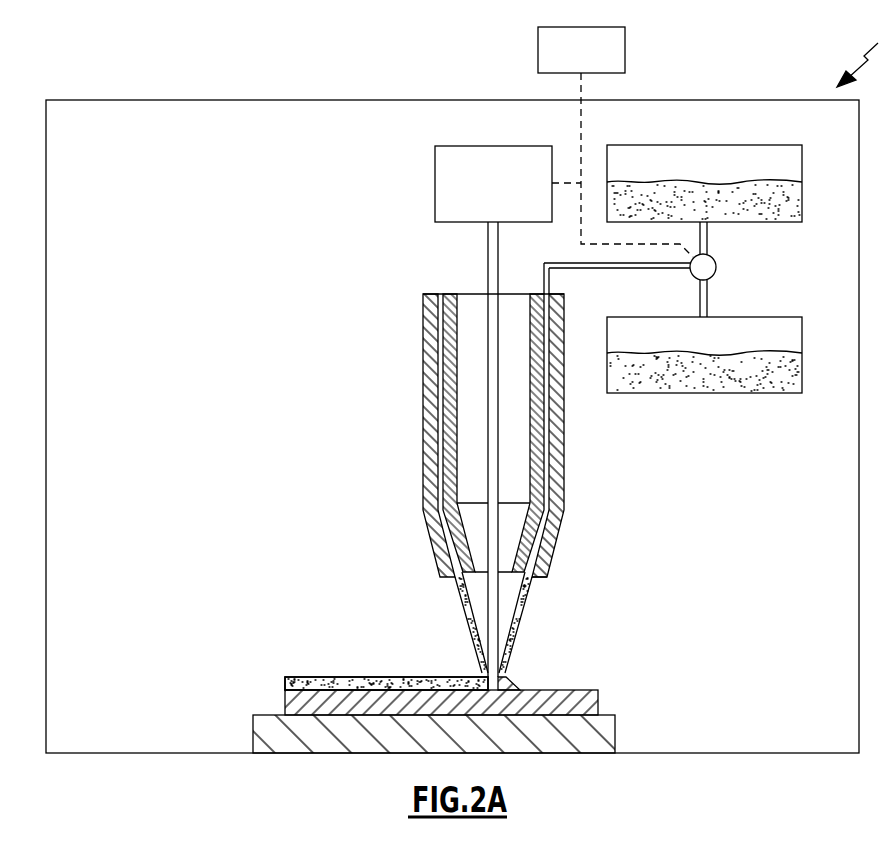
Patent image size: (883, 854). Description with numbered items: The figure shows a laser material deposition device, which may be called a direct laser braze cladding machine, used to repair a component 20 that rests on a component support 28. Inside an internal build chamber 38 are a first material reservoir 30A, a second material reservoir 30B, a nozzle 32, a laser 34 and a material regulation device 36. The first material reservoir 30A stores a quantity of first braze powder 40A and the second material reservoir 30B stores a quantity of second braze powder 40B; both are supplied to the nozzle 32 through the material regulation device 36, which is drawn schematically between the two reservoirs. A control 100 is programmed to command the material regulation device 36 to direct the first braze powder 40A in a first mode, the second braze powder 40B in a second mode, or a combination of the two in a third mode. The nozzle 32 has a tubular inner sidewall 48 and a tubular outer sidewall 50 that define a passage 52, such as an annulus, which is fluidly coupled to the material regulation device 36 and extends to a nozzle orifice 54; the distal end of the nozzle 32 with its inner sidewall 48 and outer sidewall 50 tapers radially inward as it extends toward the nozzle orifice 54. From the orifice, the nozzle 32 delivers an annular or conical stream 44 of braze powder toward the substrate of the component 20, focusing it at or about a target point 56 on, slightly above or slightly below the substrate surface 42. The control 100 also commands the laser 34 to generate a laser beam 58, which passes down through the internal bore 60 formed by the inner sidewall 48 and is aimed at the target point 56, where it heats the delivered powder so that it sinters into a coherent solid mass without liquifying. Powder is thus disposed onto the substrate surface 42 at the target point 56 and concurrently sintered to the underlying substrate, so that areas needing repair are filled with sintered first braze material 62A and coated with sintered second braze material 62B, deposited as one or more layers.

The control 100 is at (602, 63).
The component 20 is at (590, 701).
The component support 28 is at (615, 737).
The first material reservoir 30A is at (802, 158).
The second material reservoir 30B is at (802, 326).
The nozzle 32 is at (495, 476).
The laser 34 is at (434, 187).
The material regulation device 36 is at (716, 267).
The internal build chamber 38 is at (257, 510).
The first braze powder 40A is at (773, 203).
The second braze powder 40B is at (773, 373).
The substrate surface 42 is at (308, 677).
The stream 44 is at (468, 628).
The tubular inner sidewall 48 is at (532, 318).
The tubular outer sidewall 50 is at (565, 430).
The passage 52 is at (552, 304).
The nozzle orifice 54 is at (530, 577).
The target point 56 is at (505, 688).
The laser beam 58 is at (487, 606).
The internal bore 60 is at (528, 384).
The sintered first braze material 62A is at (337, 678).
The sintered second braze material 62B is at (386, 683).